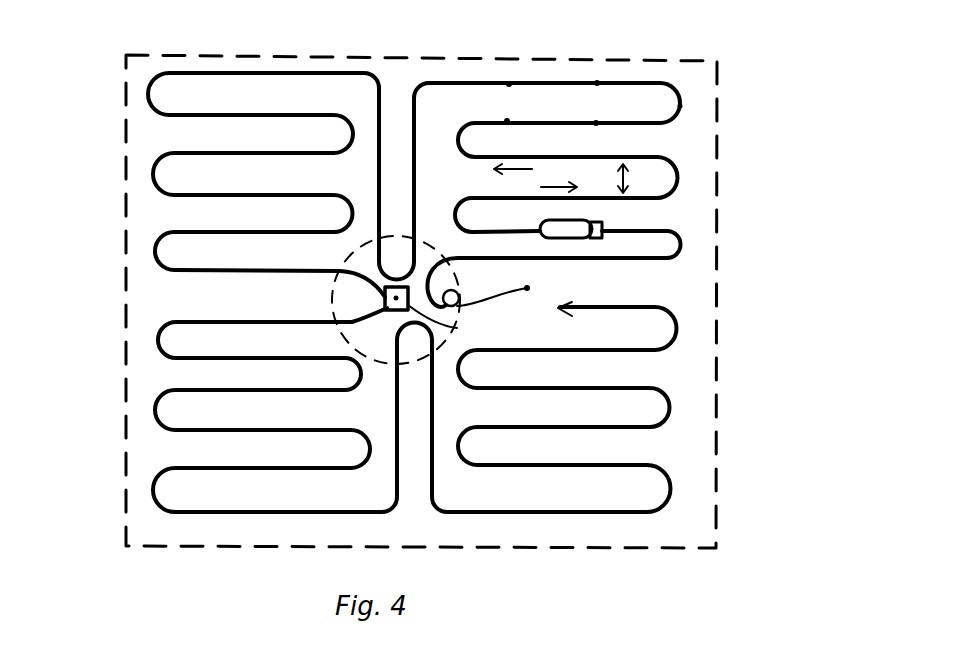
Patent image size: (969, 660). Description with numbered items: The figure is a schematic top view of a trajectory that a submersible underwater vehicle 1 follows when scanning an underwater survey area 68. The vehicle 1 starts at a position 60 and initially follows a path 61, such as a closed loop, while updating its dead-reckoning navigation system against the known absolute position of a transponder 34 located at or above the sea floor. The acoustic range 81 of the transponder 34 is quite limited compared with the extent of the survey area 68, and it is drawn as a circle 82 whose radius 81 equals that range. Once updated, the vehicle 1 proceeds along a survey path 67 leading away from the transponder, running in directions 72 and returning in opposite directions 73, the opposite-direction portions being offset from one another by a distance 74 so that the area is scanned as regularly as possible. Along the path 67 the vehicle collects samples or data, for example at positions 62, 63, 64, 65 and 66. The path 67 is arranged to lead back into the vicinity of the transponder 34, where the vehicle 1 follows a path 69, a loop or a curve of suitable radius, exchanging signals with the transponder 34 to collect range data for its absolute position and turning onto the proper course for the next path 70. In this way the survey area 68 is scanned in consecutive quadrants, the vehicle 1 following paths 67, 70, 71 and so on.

The underwater vehicle 1 is at (602, 234).
The transponder 34 is at (457, 328).
The start position 60 is at (532, 287).
The initial path 61 is at (452, 277).
The sampling position 62 is at (507, 120).
The sampling position 63 is at (595, 122).
The sampling position 64 is at (681, 106).
The sampling position 65 is at (598, 83).
The sampling position 66 is at (510, 84).
The survey path 67 is at (694, 169).
The underwater survey area 68 is at (716, 352).
The return path 69 is at (399, 265).
The next path 70 is at (141, 167).
The further path 71 is at (145, 426).
The direction 72 is at (553, 186).
The opposite direction 73 is at (531, 171).
The offset distance 74 is at (628, 180).
The acoustic range 81 is at (385, 297).
The range circle 82 is at (418, 365).